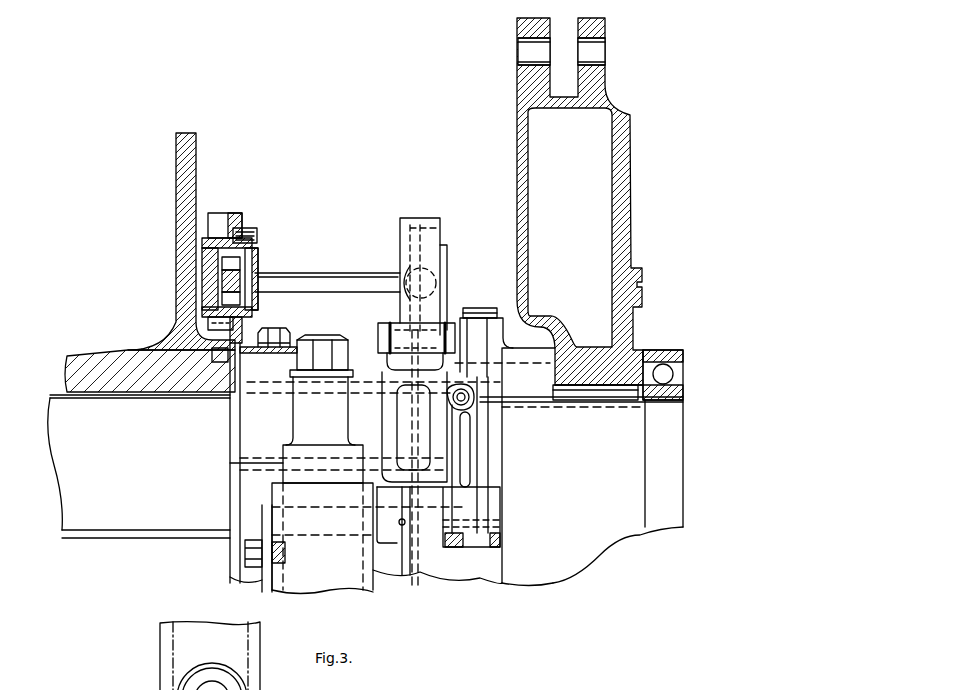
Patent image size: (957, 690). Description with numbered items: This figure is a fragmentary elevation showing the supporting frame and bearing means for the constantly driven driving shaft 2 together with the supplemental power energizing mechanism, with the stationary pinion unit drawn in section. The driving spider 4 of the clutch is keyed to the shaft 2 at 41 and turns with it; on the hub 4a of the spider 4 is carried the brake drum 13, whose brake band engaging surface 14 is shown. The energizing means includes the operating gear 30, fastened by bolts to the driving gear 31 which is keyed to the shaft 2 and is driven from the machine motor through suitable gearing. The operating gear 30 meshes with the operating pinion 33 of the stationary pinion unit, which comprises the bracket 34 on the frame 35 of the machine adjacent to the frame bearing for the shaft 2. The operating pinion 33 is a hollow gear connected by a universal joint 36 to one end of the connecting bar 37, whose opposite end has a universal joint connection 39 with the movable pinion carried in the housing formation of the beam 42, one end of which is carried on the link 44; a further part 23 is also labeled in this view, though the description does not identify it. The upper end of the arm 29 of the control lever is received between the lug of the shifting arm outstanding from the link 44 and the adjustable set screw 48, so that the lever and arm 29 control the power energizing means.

The driving shaft 2 is at (63, 452).
The driving spider 4 is at (525, 290).
The hub 4a is at (590, 380).
The brake drum 13 is at (529, 357).
The brake band engaging surface 14 is at (503, 333).
The cap 23 is at (463, 315).
The arm 29 is at (472, 445).
The operating gear 30 is at (228, 352).
The driving gear 31 is at (190, 178).
The operating pinion 33 is at (238, 233).
The bracket 34 is at (252, 347).
The frame 35 is at (362, 367).
The universal joint 36 is at (250, 290).
The connecting bar 37 is at (305, 272).
The universal joint connection 39 is at (440, 272).
The key 41 is at (578, 392).
The beam 42 is at (432, 243).
The link 44 is at (395, 420).
The set screw 48 is at (468, 393).